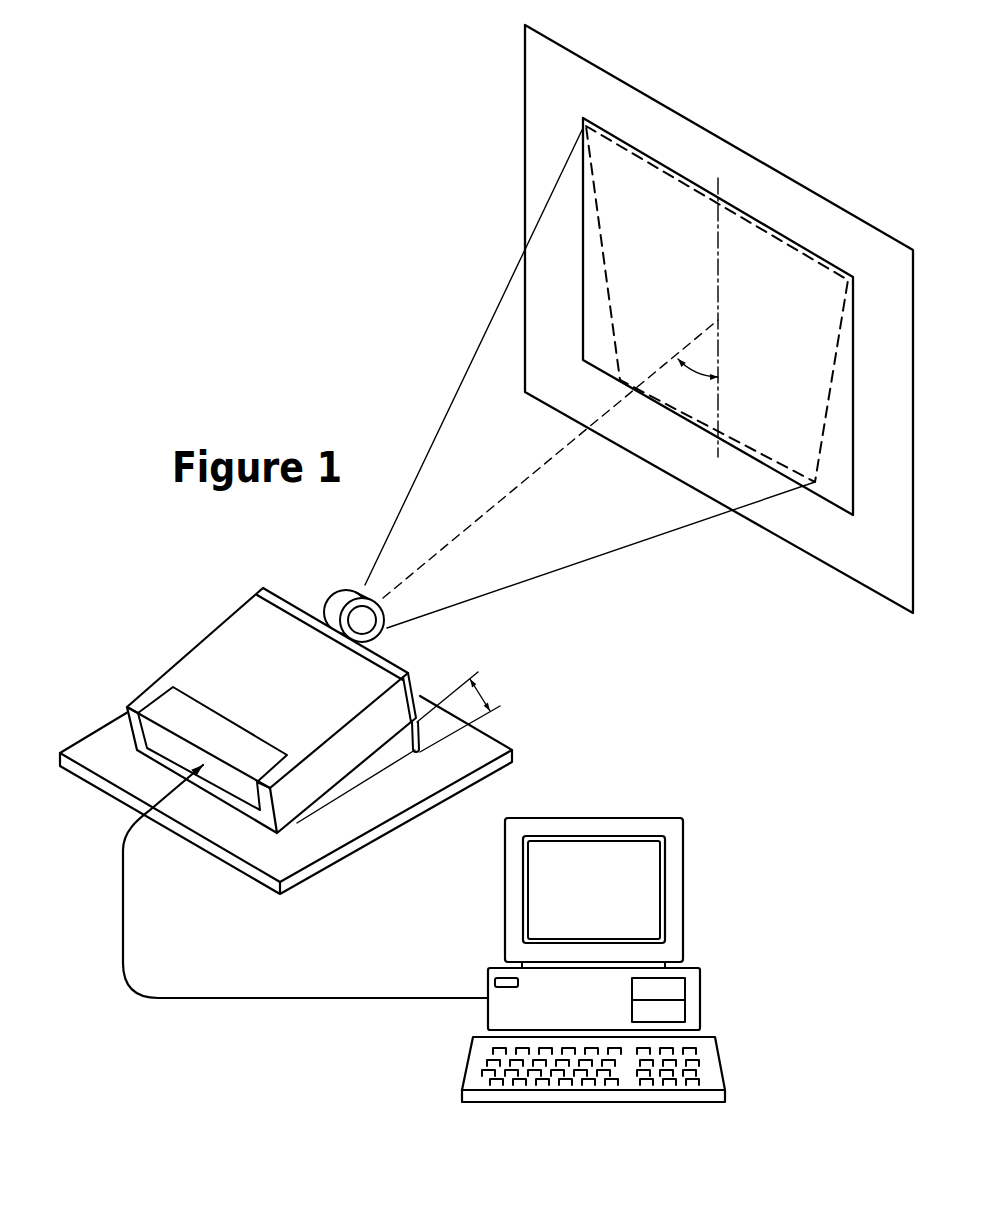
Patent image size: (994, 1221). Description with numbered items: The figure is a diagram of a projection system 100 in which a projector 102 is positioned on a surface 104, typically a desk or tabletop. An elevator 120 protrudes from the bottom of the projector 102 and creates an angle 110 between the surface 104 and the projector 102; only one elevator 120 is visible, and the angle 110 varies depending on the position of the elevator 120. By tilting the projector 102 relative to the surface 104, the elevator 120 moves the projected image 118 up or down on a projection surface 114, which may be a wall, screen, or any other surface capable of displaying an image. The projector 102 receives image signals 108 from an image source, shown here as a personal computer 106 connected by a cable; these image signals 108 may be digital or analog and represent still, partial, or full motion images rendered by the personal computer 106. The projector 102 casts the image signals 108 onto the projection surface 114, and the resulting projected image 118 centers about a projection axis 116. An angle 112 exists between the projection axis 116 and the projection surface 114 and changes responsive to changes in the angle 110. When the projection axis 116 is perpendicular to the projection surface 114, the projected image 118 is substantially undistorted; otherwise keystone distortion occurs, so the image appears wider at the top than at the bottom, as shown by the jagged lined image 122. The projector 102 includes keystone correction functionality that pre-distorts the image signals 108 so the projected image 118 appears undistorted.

The projection system 100 is at (262, 188).
The projector 102 is at (200, 641).
The surface 104 is at (102, 724).
The personal computer 106 is at (594, 818).
The image signals 108 is at (327, 998).
The angle 110 is at (487, 695).
The angle 112 is at (690, 374).
The projection surface 114 is at (525, 142).
The projection axis 116 is at (517, 488).
The projected image 118 is at (855, 482).
The elevator 120 is at (423, 733).
The jagged lined image 122 is at (613, 325).